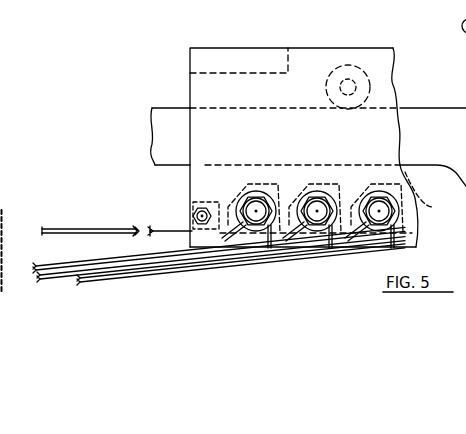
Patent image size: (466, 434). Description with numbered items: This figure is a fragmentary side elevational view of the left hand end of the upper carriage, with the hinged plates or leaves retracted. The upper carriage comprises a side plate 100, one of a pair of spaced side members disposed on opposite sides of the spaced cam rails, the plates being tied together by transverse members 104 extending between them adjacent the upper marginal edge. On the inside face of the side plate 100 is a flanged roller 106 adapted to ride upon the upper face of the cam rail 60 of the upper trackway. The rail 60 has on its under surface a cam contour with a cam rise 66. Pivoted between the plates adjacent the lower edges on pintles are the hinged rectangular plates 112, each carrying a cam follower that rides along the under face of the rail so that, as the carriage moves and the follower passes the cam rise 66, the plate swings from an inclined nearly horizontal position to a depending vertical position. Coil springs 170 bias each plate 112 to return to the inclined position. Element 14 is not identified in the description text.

The frame 14 is at (432, 207).
The cam rail 60 is at (172, 107).
The cam rise 66 is at (465, 178).
The side plate 100 is at (303, 58).
The transverse member 104 is at (229, 60).
The flanged roller 106 is at (350, 70).
The hinged plate 112 is at (167, 227).
The coil spring 170 is at (415, 238).